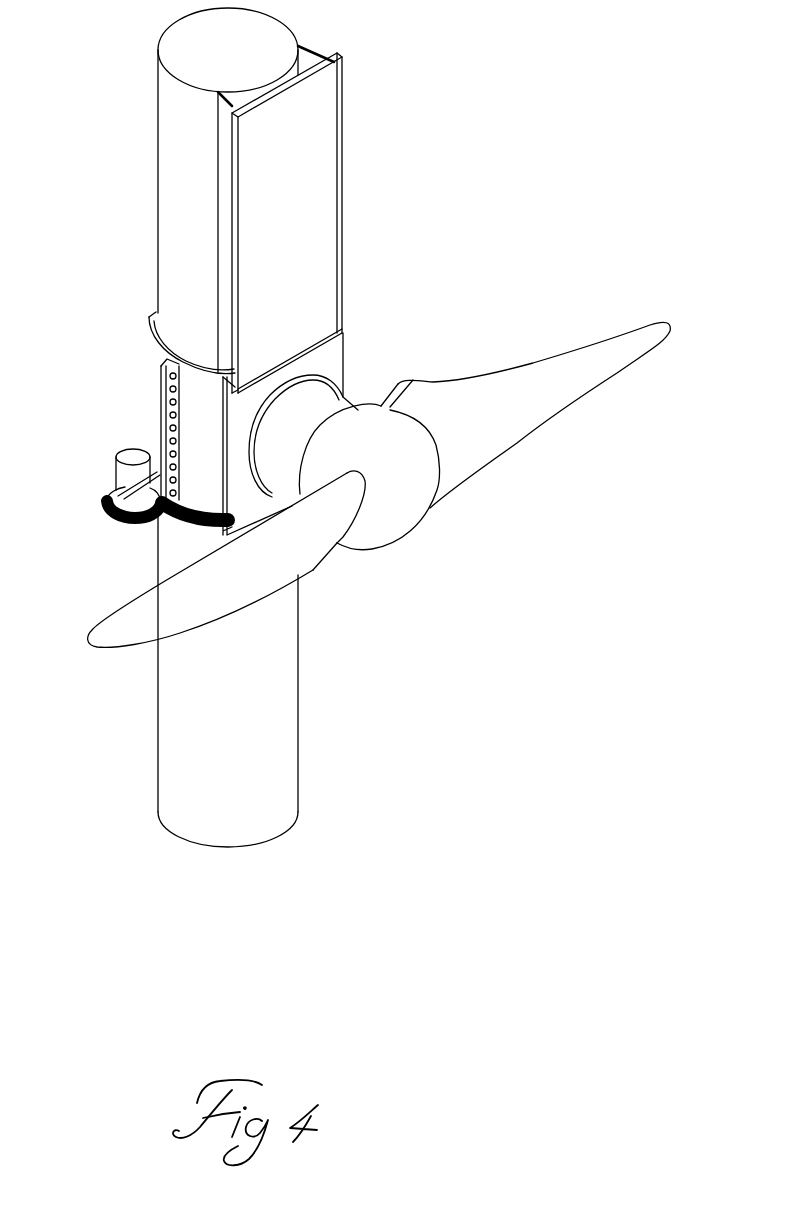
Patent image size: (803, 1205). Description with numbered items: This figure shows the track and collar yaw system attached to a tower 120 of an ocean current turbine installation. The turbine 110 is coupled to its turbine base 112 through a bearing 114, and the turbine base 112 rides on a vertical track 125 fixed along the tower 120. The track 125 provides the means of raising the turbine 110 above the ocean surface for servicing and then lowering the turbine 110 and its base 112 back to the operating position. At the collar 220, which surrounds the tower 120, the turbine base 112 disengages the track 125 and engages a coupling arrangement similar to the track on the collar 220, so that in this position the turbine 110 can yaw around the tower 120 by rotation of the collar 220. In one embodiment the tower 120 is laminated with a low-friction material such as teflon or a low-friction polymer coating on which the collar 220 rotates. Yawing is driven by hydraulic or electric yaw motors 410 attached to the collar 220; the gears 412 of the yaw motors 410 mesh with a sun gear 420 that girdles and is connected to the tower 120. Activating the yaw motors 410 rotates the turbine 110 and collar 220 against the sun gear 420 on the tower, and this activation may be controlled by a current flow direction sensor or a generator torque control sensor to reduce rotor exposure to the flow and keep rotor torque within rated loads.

The turbine 110 is at (415, 513).
The turbine base 112 is at (335, 350).
The bearing 114 is at (345, 400).
The tower 120 is at (158, 147).
The track 125 is at (337, 190).
The collar 220 is at (160, 372).
The yaw motor 410 is at (117, 463).
The gear 412 is at (108, 500).
The sun gear 420 is at (170, 511).